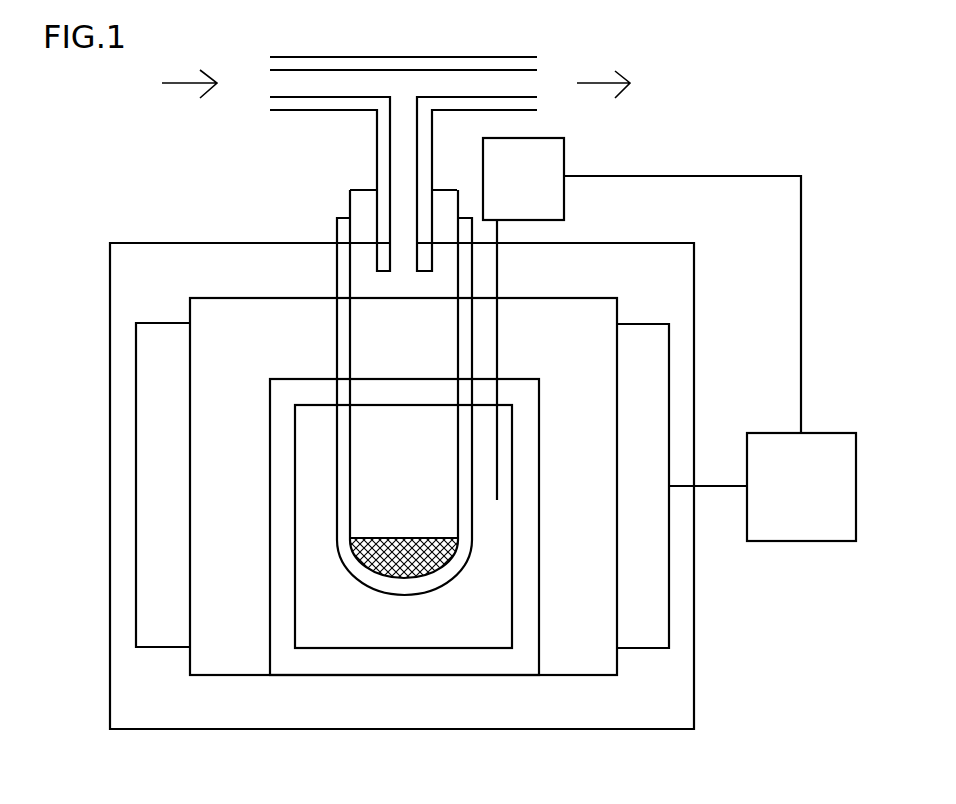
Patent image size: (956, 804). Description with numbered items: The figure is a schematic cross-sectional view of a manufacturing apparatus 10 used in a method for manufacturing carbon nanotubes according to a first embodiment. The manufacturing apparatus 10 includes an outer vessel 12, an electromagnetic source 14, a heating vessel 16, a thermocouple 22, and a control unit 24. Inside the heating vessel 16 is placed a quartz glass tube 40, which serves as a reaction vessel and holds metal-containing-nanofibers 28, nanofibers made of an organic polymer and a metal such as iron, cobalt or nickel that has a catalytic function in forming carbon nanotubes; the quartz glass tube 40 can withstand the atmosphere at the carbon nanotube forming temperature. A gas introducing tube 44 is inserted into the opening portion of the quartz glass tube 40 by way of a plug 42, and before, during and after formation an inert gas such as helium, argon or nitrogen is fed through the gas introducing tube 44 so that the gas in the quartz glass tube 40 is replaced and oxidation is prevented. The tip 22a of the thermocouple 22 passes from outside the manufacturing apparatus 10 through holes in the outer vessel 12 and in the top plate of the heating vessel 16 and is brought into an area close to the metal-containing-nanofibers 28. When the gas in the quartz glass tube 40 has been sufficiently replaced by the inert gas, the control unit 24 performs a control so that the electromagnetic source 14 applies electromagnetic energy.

The manufacturing apparatus 10 is at (151, 232).
The outer vessel 12 is at (125, 686).
The electromagnetic source 14 is at (163, 353).
The heating vessel 16 is at (391, 662).
The thermocouple 22 is at (555, 157).
The tip of the thermocouple 22a is at (497, 490).
The control unit 24 is at (804, 528).
The metal-containing-nanofibers 28 is at (370, 533).
The quartz glass tube 40 is at (343, 333).
The plug 42 is at (363, 205).
The gas introducing tube 44 is at (408, 62).